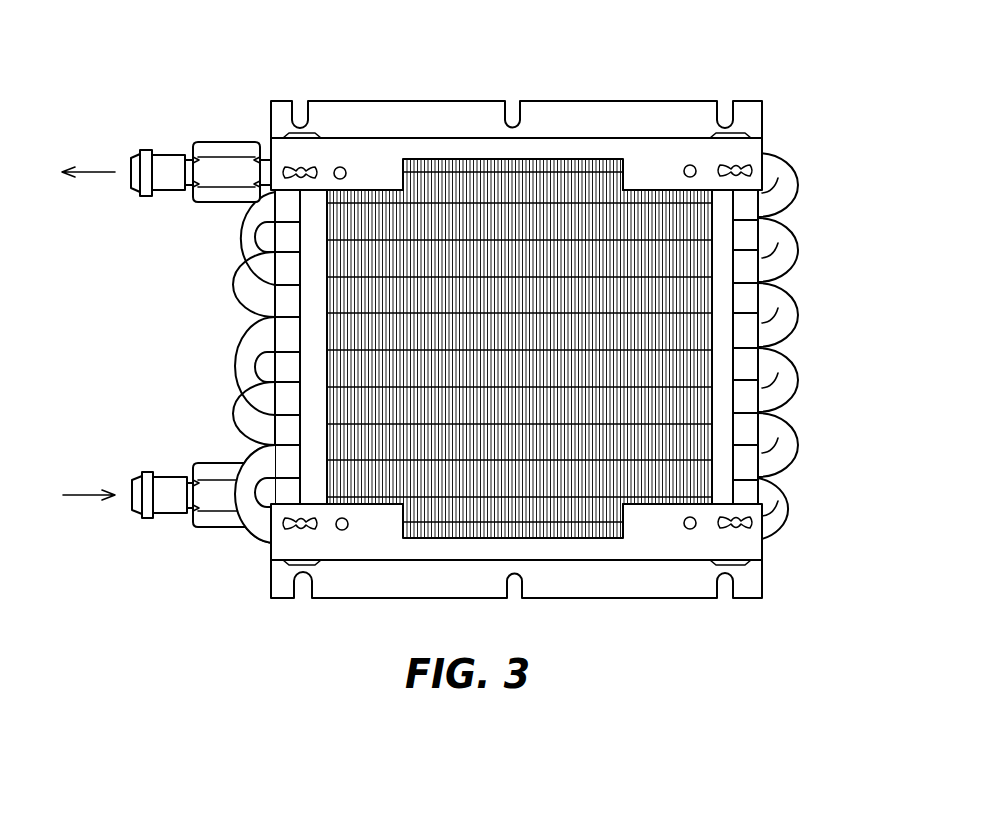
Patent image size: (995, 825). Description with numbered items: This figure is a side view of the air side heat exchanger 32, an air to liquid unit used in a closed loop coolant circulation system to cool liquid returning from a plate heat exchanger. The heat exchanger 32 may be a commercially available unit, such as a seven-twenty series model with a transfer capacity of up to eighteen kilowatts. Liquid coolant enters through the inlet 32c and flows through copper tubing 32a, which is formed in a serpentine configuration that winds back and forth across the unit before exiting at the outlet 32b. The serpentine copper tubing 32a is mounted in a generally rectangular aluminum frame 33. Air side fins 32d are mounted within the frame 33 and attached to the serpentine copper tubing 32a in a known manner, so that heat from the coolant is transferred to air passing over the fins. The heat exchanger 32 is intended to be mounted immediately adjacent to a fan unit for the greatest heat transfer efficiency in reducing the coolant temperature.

The air side heat exchanger 32 is at (469, 318).
The copper tubing 32a is at (796, 179).
The outlet 32b is at (150, 150).
The inlet 32c is at (150, 521).
The air side fins 32d is at (547, 176).
The frame 33 is at (765, 561).